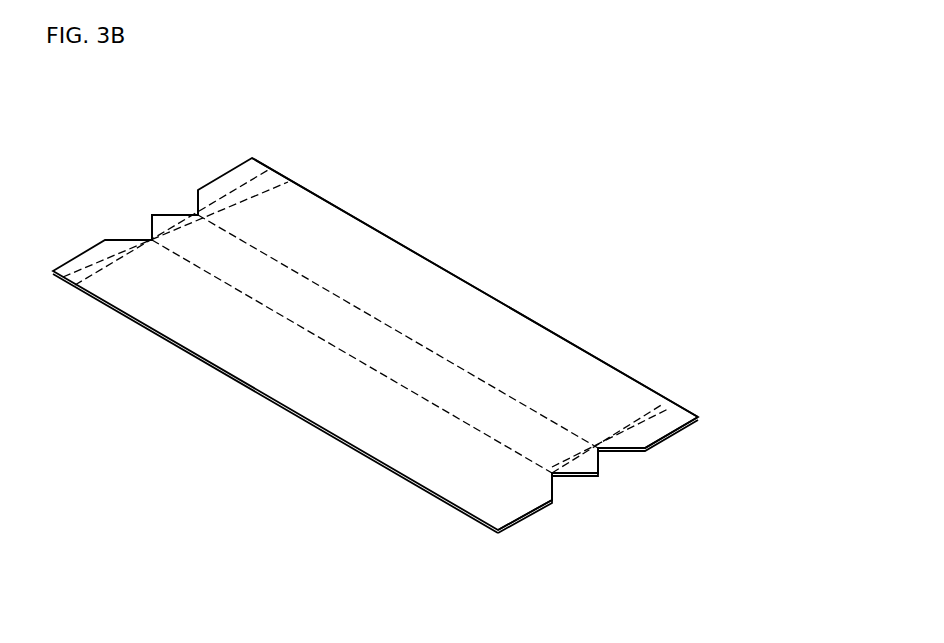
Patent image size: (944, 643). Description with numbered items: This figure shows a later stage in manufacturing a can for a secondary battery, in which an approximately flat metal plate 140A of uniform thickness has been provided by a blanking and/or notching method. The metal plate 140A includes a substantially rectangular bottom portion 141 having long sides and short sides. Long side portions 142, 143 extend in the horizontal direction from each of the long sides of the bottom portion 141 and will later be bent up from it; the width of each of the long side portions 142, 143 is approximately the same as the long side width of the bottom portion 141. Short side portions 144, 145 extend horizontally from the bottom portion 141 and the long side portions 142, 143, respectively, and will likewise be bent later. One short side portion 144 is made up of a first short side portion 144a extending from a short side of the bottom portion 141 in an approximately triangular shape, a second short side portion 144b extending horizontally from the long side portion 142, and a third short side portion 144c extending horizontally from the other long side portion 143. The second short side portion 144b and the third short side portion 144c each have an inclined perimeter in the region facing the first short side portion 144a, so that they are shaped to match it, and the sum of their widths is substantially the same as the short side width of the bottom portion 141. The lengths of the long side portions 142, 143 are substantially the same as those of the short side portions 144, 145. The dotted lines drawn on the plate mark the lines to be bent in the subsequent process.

The metal plate 140A is at (518, 228).
The bottom portion 141 is at (323, 308).
The long side portion 142 is at (288, 390).
The long side portion 143 is at (565, 362).
The short side portion 144 is at (624, 493).
The first short side portion 144a is at (587, 463).
The second short side portion 144b is at (532, 500).
The third short side portion 144c is at (652, 432).
The short side portion 145 is at (147, 207).